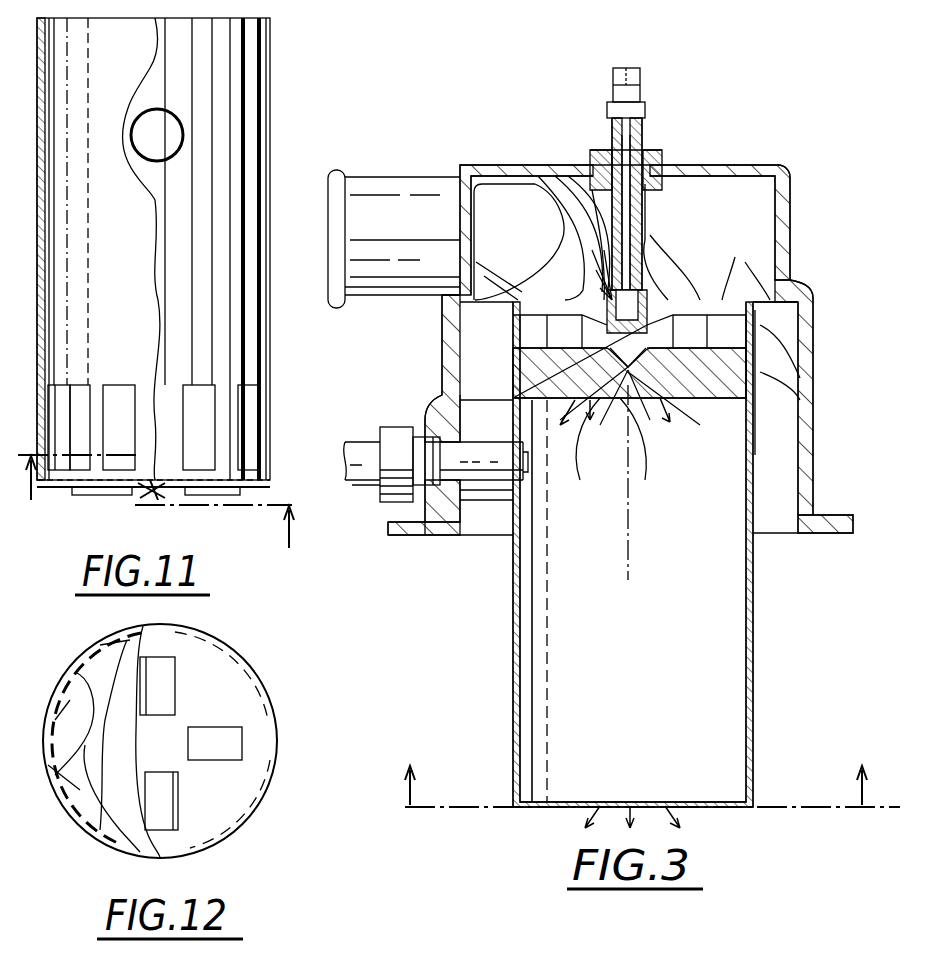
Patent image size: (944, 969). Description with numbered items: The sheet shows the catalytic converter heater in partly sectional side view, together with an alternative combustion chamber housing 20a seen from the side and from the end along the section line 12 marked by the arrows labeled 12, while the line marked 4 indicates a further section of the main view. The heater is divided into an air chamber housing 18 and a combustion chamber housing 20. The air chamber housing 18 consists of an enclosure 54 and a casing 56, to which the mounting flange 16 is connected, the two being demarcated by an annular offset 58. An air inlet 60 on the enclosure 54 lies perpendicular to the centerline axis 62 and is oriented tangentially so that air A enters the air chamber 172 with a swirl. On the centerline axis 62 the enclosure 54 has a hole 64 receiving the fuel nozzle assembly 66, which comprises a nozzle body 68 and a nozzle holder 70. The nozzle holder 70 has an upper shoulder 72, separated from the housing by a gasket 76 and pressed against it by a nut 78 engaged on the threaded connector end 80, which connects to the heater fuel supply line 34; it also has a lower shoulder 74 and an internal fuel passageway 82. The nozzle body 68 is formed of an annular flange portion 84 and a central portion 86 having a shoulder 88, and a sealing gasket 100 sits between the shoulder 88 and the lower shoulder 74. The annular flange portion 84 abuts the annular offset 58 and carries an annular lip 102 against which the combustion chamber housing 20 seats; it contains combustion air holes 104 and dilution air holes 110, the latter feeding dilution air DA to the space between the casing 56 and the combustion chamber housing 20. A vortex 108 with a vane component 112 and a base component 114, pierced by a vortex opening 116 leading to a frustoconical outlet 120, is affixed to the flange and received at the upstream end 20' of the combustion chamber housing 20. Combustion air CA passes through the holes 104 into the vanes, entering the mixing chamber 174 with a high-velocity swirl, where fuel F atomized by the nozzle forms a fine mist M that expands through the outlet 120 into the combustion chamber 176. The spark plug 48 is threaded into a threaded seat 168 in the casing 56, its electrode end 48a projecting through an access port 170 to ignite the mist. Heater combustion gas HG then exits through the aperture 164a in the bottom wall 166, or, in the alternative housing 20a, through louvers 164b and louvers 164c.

In FIG. 3, the mounting flange 16 is at (826, 515).
In FIG. 3, the air chamber housing 18 is at (840, 175).
In FIG. 3, the combustion chamber housing 20 is at (667, 554).
In FIG. 3, the upstream end 20' is at (711, 497).
In FIG. 11, the combustion chamber housing 20a is at (270, 20).
In FIG. 12, the combustion chamber housing 20a is at (108, 845).
In FIG. 3, the heater fuel supply line 34 is at (640, 78).
In FIG. 3, the spark plug 48 is at (368, 490).
In FIG. 3, the electrode end 48a is at (532, 480).
In FIG. 3, the enclosure 54 is at (778, 185).
In FIG. 3, the casing 56 is at (815, 452).
In FIG. 3, the annular offset 58 is at (815, 312).
In FIG. 3, the air inlet 60 is at (406, 176).
In FIG. 3, the centerline axis 62 is at (630, 558).
In FIG. 3, the hole 64 is at (612, 158).
In FIG. 3, the fuel nozzle assembly 66 is at (672, 214).
In FIG. 3, the nozzle body 68 is at (686, 290).
In FIG. 3, the nozzle holder 70 is at (728, 172).
In FIG. 3, the upper shoulder 72 is at (660, 178).
In FIG. 3, the lower shoulder 74 is at (500, 168).
In FIG. 3, the gasket 76 is at (690, 172).
In FIG. 3, the nut 78 is at (605, 150).
In FIG. 3, the threaded connector end 80 is at (648, 105).
In FIG. 3, the fuel passageway 82 is at (598, 162).
In FIG. 3, the annular flange portion 84 is at (744, 258).
In FIG. 3, the central portion 86 is at (556, 248).
In FIG. 3, the shoulder 88 is at (578, 195).
In FIG. 3, the sealing gasket 100 is at (690, 218).
In FIG. 3, the annular lip 102 is at (445, 382).
In FIG. 3, the combustion air holes 104 is at (485, 270).
In FIG. 3, the vortex 108 is at (727, 410).
In FIG. 3, the dilution air holes 110 is at (440, 328).
In FIG. 3, the vane component 112 is at (800, 368).
In FIG. 3, the base component 114 is at (805, 400).
In FIG. 3, the vortex opening 116 is at (672, 420).
In FIG. 3, the frustoconical outlet 120 is at (568, 400).
In FIG. 3, the aperture 164a is at (730, 810).
In FIG. 11, the louvers 164b is at (125, 392).
In FIG. 12, the louvers 164b is at (52, 718).
In FIG. 11, the louvers 164c is at (212, 492).
In FIG. 12, the louvers 164c is at (200, 730).
In FIG. 3, the bottom wall 166 is at (520, 810).
In FIG. 3, the threaded seat 168 is at (433, 545).
In FIG. 11, the access port 170 is at (143, 113).
In FIG. 3, the access port 170 is at (500, 490).
In FIG. 3, the air chamber 172 is at (755, 185).
In FIG. 3, the mixing chamber 174 is at (585, 410).
In FIG. 3, the combustion chamber 176 is at (700, 657).
In FIG. 3, the section line 4- 4 is at (641, 785).
In FIG. 11, the section line 12- 12 is at (165, 522).
In FIG. 3, the air A is at (515, 242).
In FIG. 3, the combustion air CA is at (631, 323).
In FIG. 3, the direction DA is at (460, 332).
In FIG. 3, the fuel F is at (648, 345).
In FIG. 3, the mist M is at (641, 482).
In FIG. 3, the heater combustion gas HG is at (670, 800).